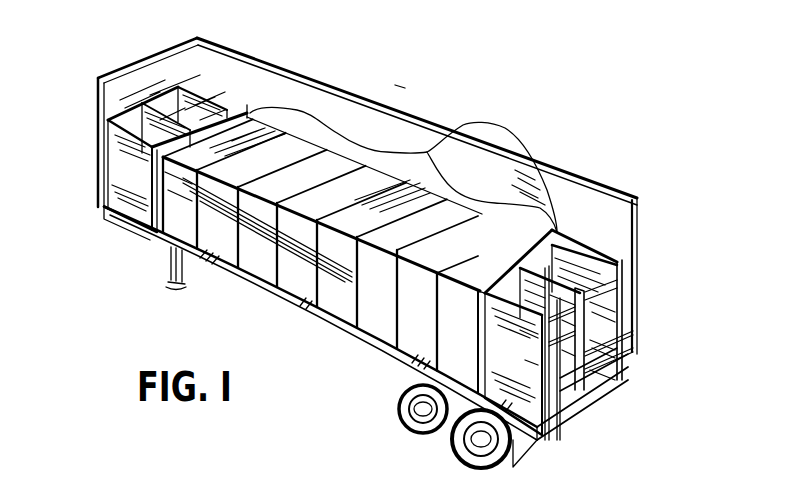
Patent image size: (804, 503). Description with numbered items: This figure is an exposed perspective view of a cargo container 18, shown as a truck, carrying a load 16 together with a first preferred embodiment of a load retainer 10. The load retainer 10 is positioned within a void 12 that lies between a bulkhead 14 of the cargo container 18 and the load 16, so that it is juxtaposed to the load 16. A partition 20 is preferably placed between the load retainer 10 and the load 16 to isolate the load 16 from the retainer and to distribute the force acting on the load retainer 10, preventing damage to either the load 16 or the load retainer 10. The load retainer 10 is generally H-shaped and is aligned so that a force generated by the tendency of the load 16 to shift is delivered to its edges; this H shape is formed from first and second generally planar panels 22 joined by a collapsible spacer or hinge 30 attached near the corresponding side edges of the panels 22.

The load retainer 10 is at (219, 92).
The void 12 is at (127, 227).
The bulkhead 14 is at (162, 67).
The load 16 is at (449, 140).
The cargo container 18 is at (372, 98).
The partition 20 is at (252, 105).
The generally planar panels 22 is at (176, 85).
The collapsible spacer or hinge 30 is at (592, 273).